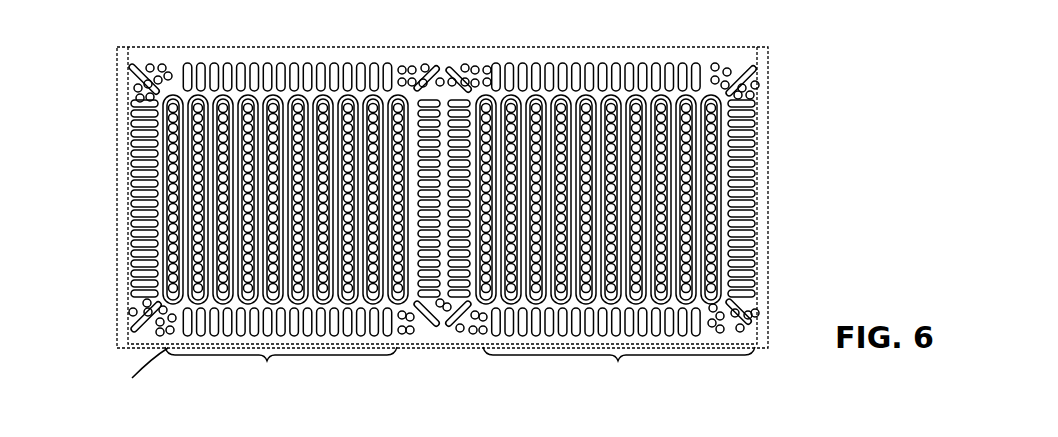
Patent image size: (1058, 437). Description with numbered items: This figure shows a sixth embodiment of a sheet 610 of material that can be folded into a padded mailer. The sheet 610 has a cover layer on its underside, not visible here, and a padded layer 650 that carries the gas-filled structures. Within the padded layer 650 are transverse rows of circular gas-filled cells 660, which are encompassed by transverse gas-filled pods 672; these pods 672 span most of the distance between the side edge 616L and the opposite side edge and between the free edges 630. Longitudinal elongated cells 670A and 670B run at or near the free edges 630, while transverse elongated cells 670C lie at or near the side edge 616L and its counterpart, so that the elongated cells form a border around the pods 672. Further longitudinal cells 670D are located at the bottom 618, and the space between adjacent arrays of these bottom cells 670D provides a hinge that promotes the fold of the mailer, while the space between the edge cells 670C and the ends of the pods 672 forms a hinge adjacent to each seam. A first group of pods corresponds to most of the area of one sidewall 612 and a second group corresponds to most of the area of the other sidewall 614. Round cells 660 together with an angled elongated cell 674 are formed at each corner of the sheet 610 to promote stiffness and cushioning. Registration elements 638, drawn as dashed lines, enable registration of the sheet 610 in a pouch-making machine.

The sheet 610 is at (815, 25).
The sidewall 612 is at (281, 368).
The sidewall 614 is at (619, 369).
The left side edge 616L is at (243, 65).
The bottom 618 is at (150, 152).
The free edge 630 is at (130, 115).
The registration element 638 is at (133, 287).
The padded layer 650 is at (143, 293).
The circular gas-filled cell 660 is at (438, 199).
The transverse gas-filled pod 672 is at (705, 138).
The angled elongated cell 674 is at (130, 87).
The longitudinal elongated cell 670A is at (140, 207).
The longitudinal elongated cell 670B is at (750, 258).
The transverse elongated cell 670C is at (203, 77).
The bottom longitudinal cell 670D is at (433, 272).